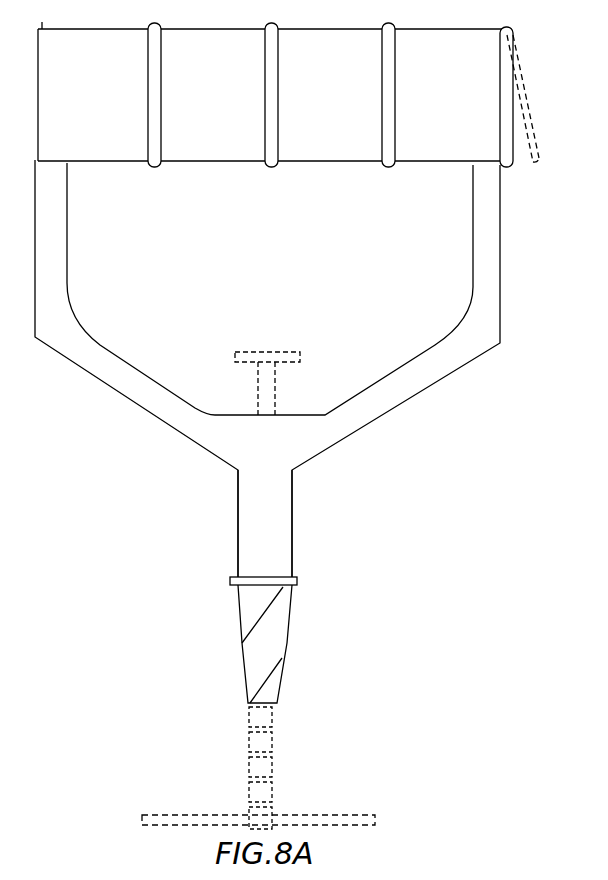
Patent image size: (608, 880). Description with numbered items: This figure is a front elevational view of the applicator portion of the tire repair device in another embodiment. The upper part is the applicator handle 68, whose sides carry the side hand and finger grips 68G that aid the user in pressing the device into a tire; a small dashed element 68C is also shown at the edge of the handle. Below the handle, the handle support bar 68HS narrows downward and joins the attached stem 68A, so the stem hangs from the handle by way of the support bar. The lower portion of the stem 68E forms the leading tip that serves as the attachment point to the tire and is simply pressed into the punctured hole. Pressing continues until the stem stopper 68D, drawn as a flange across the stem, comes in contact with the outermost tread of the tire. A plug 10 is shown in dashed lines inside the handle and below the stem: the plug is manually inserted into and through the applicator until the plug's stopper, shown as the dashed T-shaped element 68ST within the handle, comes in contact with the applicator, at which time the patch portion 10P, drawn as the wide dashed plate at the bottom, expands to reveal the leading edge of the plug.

The applicator handle 68 is at (443, 147).
The side hand and finger grips 68G is at (272, 102).
The clip 68C is at (525, 107).
The handle support bar 68HS is at (482, 345).
The stop 68ST is at (292, 354).
The plug 10 is at (268, 392).
The attached stem 68A is at (275, 523).
The stem stopper 68D is at (230, 580).
The stem 68E is at (262, 642).
The patch portion 10P is at (308, 818).